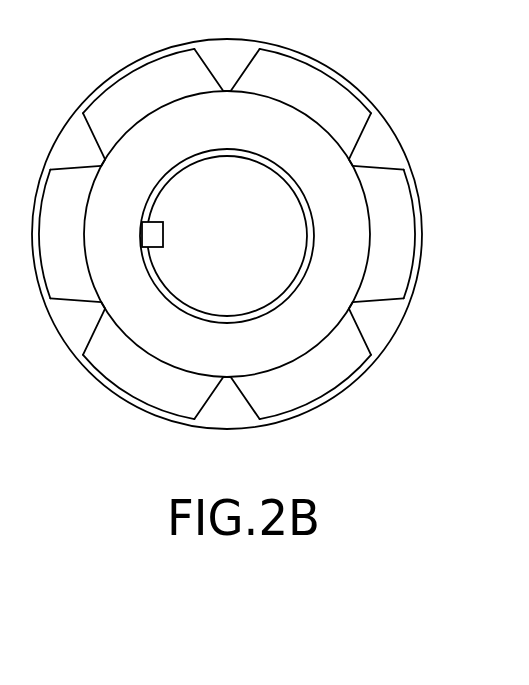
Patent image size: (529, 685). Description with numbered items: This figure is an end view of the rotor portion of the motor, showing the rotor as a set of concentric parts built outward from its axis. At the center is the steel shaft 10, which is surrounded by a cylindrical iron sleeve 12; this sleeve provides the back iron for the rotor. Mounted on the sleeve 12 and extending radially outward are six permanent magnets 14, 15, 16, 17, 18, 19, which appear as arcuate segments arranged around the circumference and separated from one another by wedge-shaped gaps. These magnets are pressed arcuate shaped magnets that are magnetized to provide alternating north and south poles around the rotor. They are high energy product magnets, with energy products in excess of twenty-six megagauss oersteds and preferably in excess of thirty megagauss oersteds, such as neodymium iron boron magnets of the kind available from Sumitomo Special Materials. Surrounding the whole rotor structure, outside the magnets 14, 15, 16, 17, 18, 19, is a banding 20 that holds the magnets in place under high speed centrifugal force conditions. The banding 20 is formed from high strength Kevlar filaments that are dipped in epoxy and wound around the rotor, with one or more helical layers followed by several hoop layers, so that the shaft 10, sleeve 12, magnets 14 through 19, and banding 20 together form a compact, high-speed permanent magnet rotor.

The steel shaft 10 is at (238, 250).
The cylindrical iron sleeve 12 is at (307, 148).
The permanent magnet 14 is at (287, 72).
The permanent magnet 15 is at (383, 185).
The permanent magnet 16 is at (337, 355).
The permanent magnet 17 is at (93, 345).
The permanent magnet 18 is at (67, 193).
The permanent magnet 19 is at (146, 70).
The banding 20 is at (335, 73).